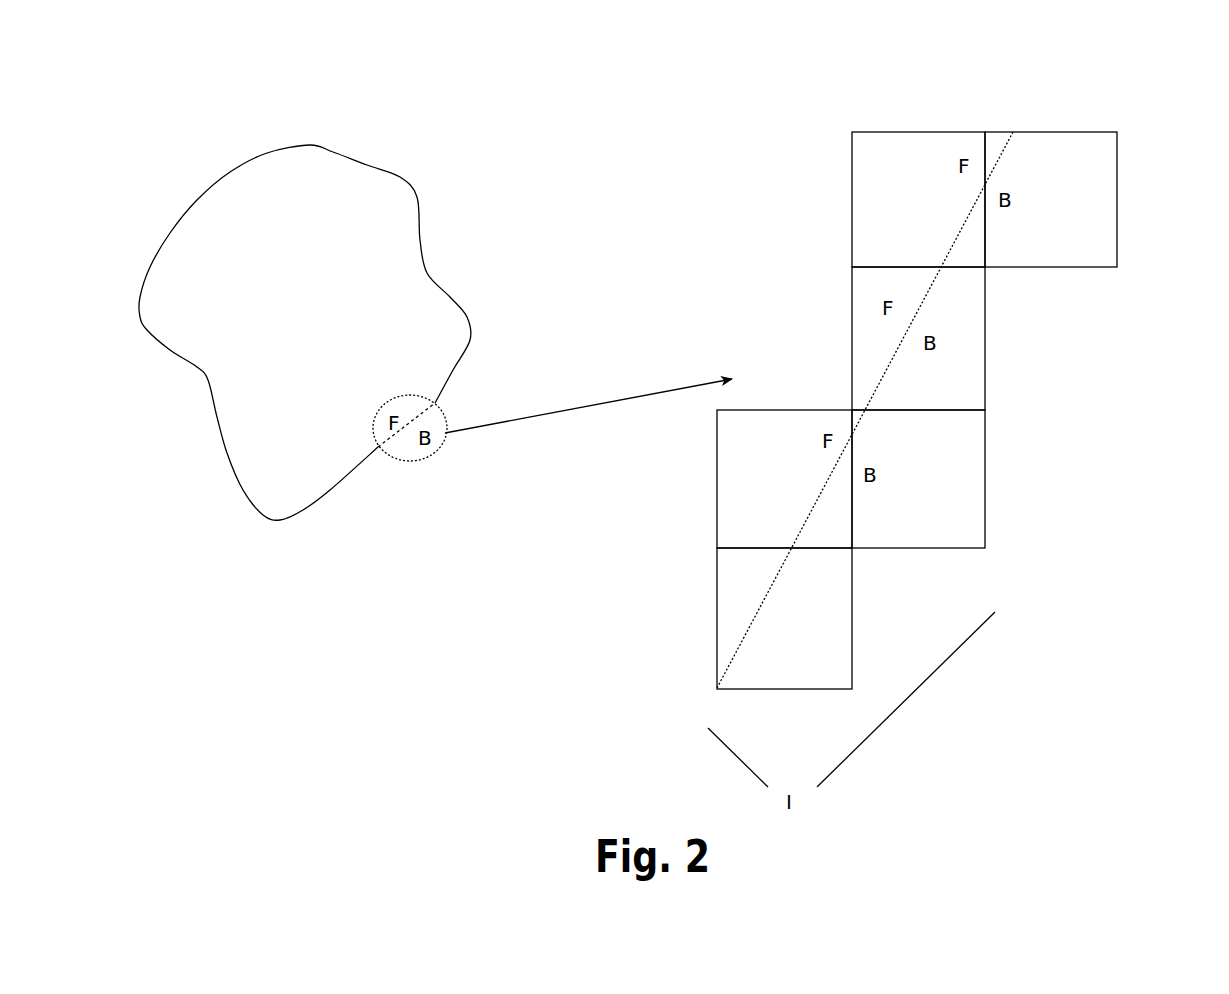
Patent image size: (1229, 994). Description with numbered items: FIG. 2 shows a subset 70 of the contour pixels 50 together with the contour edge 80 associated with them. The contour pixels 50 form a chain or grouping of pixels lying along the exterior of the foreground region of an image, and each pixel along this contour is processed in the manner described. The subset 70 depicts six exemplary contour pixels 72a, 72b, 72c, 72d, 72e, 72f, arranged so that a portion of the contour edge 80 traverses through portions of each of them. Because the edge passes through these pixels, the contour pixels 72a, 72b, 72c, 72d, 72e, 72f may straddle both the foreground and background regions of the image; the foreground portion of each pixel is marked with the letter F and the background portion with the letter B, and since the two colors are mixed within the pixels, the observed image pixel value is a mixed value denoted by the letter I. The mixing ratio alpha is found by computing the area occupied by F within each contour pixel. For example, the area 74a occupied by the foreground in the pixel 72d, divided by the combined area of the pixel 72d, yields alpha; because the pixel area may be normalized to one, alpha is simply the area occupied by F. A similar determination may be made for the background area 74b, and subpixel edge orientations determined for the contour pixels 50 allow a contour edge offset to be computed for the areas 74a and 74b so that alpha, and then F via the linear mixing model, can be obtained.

The contour pixels 50 is at (418, 202).
The subset of contour pixels 70 is at (438, 412).
The contour pixel 72a is at (1117, 197).
The contour pixel 72b is at (985, 342).
The contour pixel 72c is at (985, 490).
The contour pixel 72d is at (852, 620).
The contour pixel 72e is at (887, 132).
The contour pixel 72f is at (758, 410).
The area occupied by the foreground 74a is at (735, 607).
The area occupied by the background 74b is at (810, 645).
The contour edge 80 is at (412, 454).